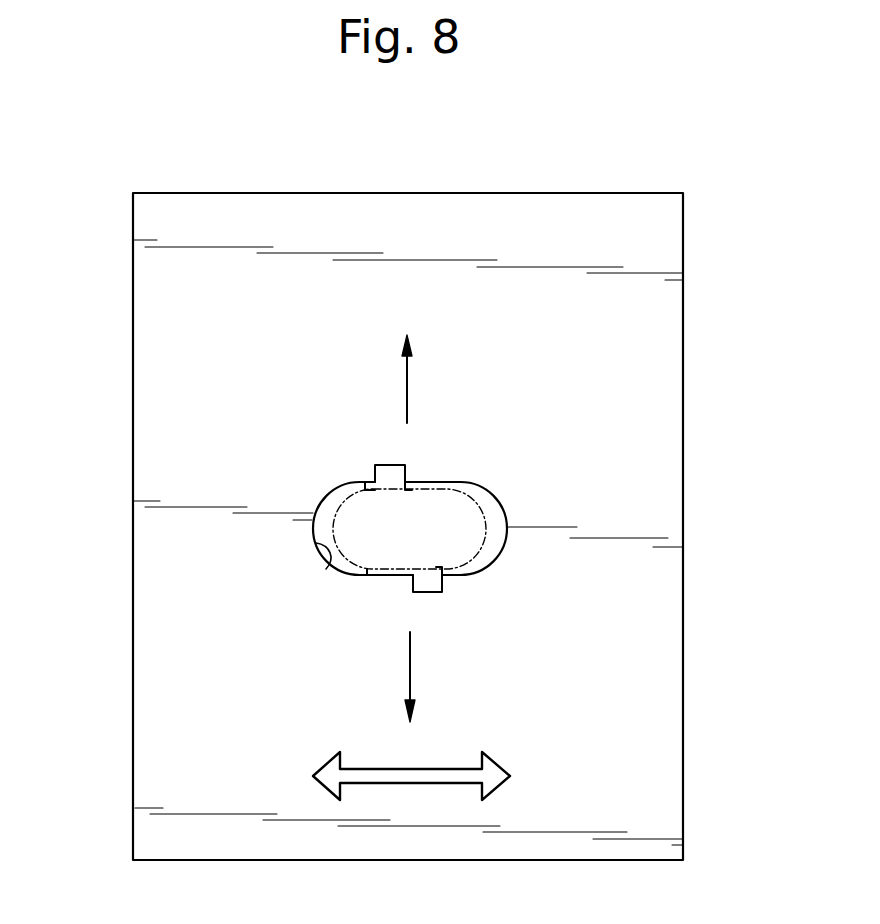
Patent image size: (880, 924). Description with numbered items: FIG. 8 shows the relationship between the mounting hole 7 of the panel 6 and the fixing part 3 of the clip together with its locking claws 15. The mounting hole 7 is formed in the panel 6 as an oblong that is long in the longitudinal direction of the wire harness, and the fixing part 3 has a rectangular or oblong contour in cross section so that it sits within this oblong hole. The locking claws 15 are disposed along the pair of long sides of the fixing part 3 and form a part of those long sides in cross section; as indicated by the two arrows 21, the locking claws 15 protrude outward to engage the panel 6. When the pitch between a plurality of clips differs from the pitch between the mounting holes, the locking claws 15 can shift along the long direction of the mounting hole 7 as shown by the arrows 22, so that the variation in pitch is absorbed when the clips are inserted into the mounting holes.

The panel 6 is at (208, 228).
The fixing part 3 is at (313, 497).
The mounting hole 7 is at (327, 567).
The locking claw 15 is at (388, 470).
The arrows indicating protruding direction 21 is at (408, 377).
The arrows indicating shifting direction 22 is at (415, 776).